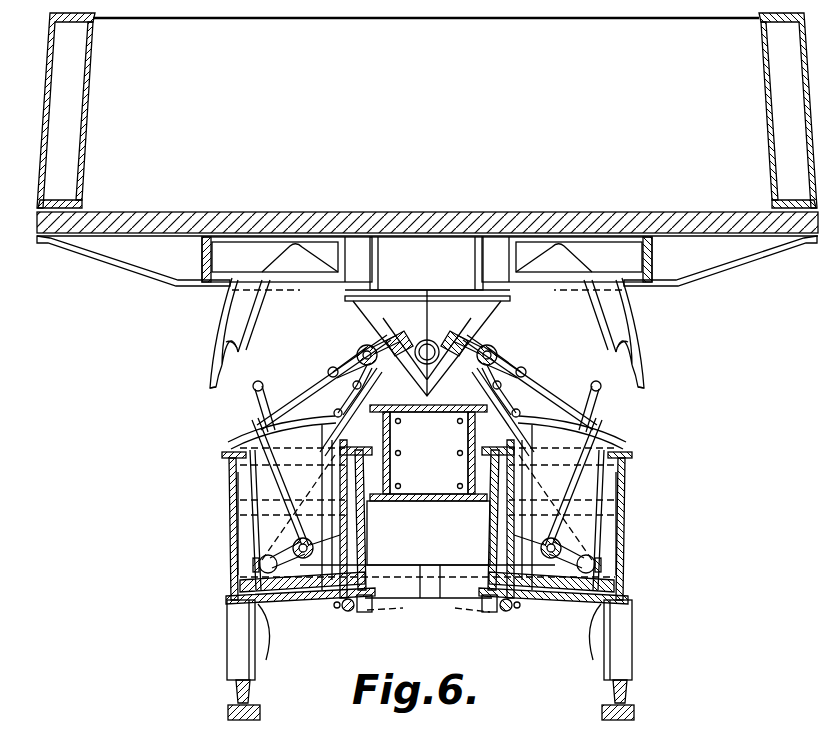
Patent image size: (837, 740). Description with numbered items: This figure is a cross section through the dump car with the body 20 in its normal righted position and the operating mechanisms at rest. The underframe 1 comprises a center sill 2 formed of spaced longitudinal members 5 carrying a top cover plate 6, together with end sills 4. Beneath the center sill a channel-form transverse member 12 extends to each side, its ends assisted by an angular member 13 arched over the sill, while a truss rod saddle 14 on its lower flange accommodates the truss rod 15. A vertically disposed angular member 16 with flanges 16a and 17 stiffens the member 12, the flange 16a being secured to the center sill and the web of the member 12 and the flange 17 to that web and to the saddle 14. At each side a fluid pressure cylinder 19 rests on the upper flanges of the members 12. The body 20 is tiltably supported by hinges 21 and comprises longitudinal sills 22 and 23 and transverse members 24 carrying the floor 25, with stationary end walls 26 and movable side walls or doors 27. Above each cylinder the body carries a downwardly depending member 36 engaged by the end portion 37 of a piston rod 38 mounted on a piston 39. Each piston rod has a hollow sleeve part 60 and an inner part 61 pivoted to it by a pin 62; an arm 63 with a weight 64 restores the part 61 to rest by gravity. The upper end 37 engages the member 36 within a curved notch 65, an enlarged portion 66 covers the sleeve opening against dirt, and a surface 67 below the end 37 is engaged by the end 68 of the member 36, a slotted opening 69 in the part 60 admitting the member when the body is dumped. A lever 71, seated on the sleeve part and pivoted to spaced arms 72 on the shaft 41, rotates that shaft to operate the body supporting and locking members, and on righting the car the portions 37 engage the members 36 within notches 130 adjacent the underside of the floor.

The underframe 1 is at (390, 440).
The center sill 2 is at (468, 440).
The end sill 4 is at (420, 506).
The longitudinal member 5 is at (390, 470).
The top cover plate 6 is at (428, 422).
The transverse member 12 is at (427, 549).
The angular member 13 is at (626, 460).
The truss rod saddle 14 is at (527, 610).
The truss rod 15 is at (515, 609).
The vertically disposed angular member 16 is at (488, 613).
The flange 16a is at (428, 608).
The flange 17 is at (479, 606).
The fluid pressure cylinder 19 is at (623, 543).
The body 20 is at (400, 214).
The hinge 21 is at (410, 322).
The longitudinally disposed sill 22 is at (475, 253).
The longitudinally disposed sill 23 is at (676, 258).
The transverse member 24 is at (574, 302).
The floor 25 is at (205, 234).
The stationary end wall 26 is at (426, 45).
The movable side wall or door 27 is at (722, 100).
The downwardly depending member 36 is at (664, 313).
The end portion of piston rod 37 is at (578, 364).
The piston rod 38 is at (605, 478).
The piston 39 is at (509, 611).
The shaft 41 is at (511, 322).
The hollow sleeve part 60 is at (560, 545).
The part 61 is at (600, 518).
The pin 62 is at (494, 537).
The outwardly extending arm 63 is at (596, 562).
The weight 64 is at (592, 568).
The curved notch 65 is at (618, 363).
The enlarged portion 66 is at (569, 385).
The surface 67 is at (612, 397).
The end of member 68 is at (668, 392).
The slotted opening 69 is at (604, 503).
The lever 71 is at (427, 432).
The spaced arms 72 is at (528, 343).
The notch 130 is at (571, 196).